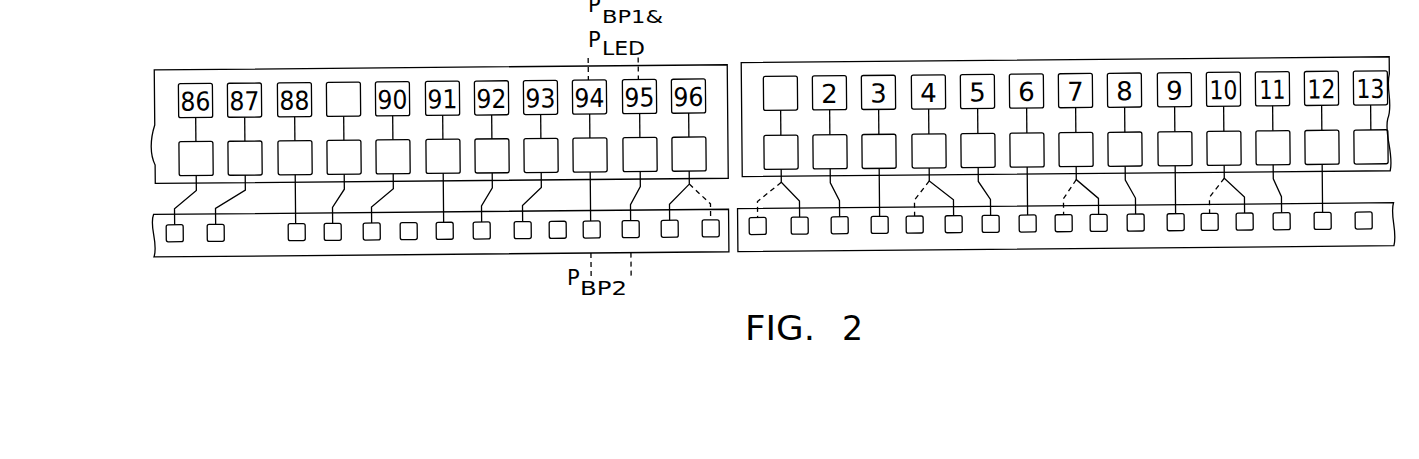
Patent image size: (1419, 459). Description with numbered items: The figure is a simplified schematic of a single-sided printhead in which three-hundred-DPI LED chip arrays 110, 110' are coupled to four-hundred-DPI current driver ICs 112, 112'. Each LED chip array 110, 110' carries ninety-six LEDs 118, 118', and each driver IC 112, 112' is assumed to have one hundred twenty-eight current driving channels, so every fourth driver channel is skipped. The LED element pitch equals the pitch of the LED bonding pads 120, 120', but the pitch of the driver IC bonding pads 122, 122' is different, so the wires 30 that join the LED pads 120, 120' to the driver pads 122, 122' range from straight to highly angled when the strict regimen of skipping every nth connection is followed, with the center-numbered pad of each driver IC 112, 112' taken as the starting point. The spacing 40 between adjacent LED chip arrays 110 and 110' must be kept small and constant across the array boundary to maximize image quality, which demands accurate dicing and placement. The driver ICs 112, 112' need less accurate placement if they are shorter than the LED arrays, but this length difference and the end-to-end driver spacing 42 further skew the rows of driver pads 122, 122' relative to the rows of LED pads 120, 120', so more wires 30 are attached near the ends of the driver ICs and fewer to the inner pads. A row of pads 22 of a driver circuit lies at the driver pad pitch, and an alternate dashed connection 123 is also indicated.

The LED chip array 110 is at (440, 110).
The LED chip array 110' is at (1066, 98).
The driver IC 112 is at (440, 255).
The driver IC 112' is at (1067, 250).
The LED 118 is at (376, 85).
The LED 118' is at (795, 94).
The bonding pad 120 is at (508, 100).
The bonding pad 120' is at (1239, 91).
The driver IC bonding pad 122 is at (422, 263).
The driver IC bonding pad 122' is at (1060, 252).
The wire 30 is at (446, 200).
The spacing 40 is at (733, 65).
The spacing 42 is at (733, 252).
The row of pads 22 is at (704, 237).
The alternate connection trace 123 is at (693, 238).